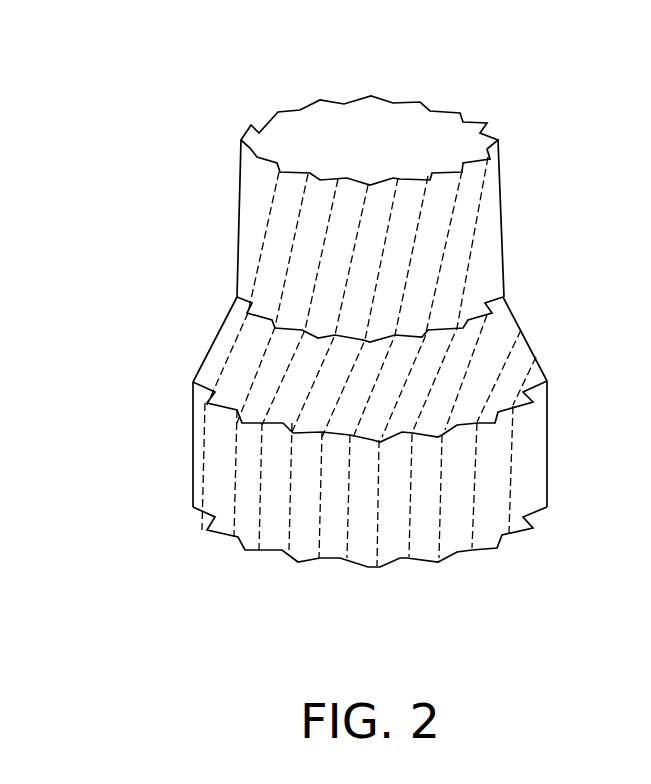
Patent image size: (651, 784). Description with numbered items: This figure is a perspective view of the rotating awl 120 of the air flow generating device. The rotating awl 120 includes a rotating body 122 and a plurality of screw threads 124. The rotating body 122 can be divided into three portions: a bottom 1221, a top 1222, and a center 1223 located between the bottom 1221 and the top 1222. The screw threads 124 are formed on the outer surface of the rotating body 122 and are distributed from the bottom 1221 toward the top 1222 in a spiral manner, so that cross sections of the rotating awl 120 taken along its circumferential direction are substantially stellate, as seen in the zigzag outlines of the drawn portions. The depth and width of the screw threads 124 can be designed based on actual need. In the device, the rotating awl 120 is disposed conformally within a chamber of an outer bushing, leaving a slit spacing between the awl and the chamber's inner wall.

The rotating awl 120 is at (473, 75).
The rotating body 122 is at (83, 248).
The bottom 1221 is at (217, 453).
The top 1222 is at (270, 268).
The center 1223 is at (238, 365).
The screw threads 124 is at (450, 232).